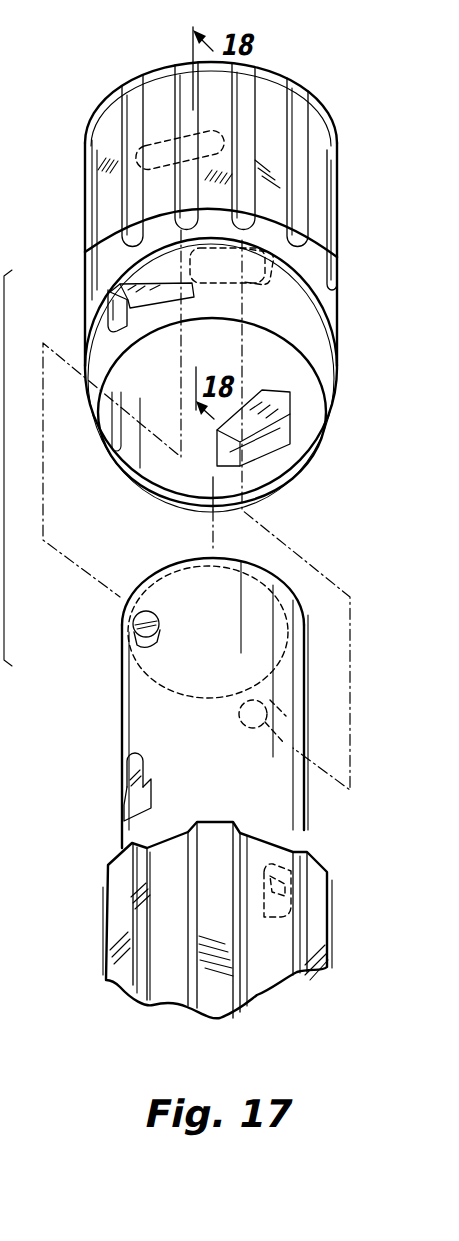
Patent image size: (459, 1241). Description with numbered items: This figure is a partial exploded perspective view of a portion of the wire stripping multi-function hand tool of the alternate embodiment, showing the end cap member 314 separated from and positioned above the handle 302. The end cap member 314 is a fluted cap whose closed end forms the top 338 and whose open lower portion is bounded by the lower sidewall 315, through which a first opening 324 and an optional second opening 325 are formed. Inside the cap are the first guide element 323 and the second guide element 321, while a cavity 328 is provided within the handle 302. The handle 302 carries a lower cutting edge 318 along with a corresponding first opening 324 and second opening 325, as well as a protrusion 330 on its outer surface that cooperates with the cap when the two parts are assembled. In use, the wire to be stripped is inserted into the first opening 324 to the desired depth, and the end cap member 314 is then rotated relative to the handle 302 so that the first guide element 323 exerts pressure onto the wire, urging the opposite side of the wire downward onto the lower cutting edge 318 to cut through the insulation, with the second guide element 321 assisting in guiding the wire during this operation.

The handle 302 is at (114, 961).
The end cap member 314 is at (310, 127).
The lower sidewall 315 is at (327, 343).
The lower cutting edge 318 is at (123, 808).
The second guide element 321 is at (262, 428).
The first guide element 323 is at (158, 297).
The first opening 324 is at (110, 302).
The second opening 325 is at (292, 420).
The cavity 328 is at (155, 187).
The protrusion 330 is at (141, 608).
The top 338 is at (282, 78).